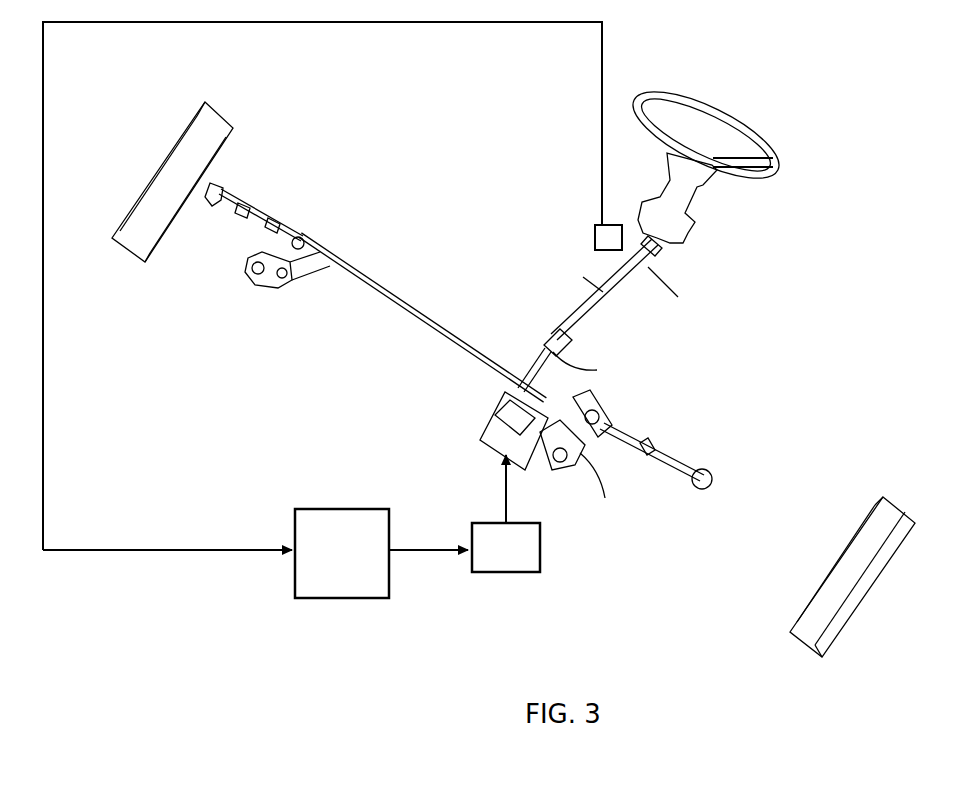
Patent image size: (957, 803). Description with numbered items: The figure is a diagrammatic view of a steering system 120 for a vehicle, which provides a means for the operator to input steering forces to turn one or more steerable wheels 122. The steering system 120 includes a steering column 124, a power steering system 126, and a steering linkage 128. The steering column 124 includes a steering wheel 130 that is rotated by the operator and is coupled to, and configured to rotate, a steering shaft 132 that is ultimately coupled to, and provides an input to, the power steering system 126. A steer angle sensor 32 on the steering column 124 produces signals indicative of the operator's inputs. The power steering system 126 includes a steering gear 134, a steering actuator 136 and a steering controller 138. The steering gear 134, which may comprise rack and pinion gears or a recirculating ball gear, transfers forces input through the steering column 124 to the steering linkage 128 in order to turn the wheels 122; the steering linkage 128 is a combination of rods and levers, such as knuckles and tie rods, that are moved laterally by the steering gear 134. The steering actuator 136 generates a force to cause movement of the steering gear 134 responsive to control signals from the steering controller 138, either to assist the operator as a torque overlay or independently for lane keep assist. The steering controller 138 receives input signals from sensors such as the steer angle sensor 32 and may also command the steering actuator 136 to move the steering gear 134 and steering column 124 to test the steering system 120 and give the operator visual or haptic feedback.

The steering system 120 is at (446, 136).
The steer angle sensor 32 is at (607, 237).
The steerable wheels 122 is at (225, 122).
The steering wheel 130 is at (783, 153).
The steering column 124 is at (705, 217).
The steering shaft 132 is at (660, 247).
The steering linkage 128 is at (417, 294).
The power steering system 126 is at (345, 442).
The steering gear 134 is at (492, 447).
The steering controller 138 is at (365, 582).
The steering actuator 136 is at (527, 557).